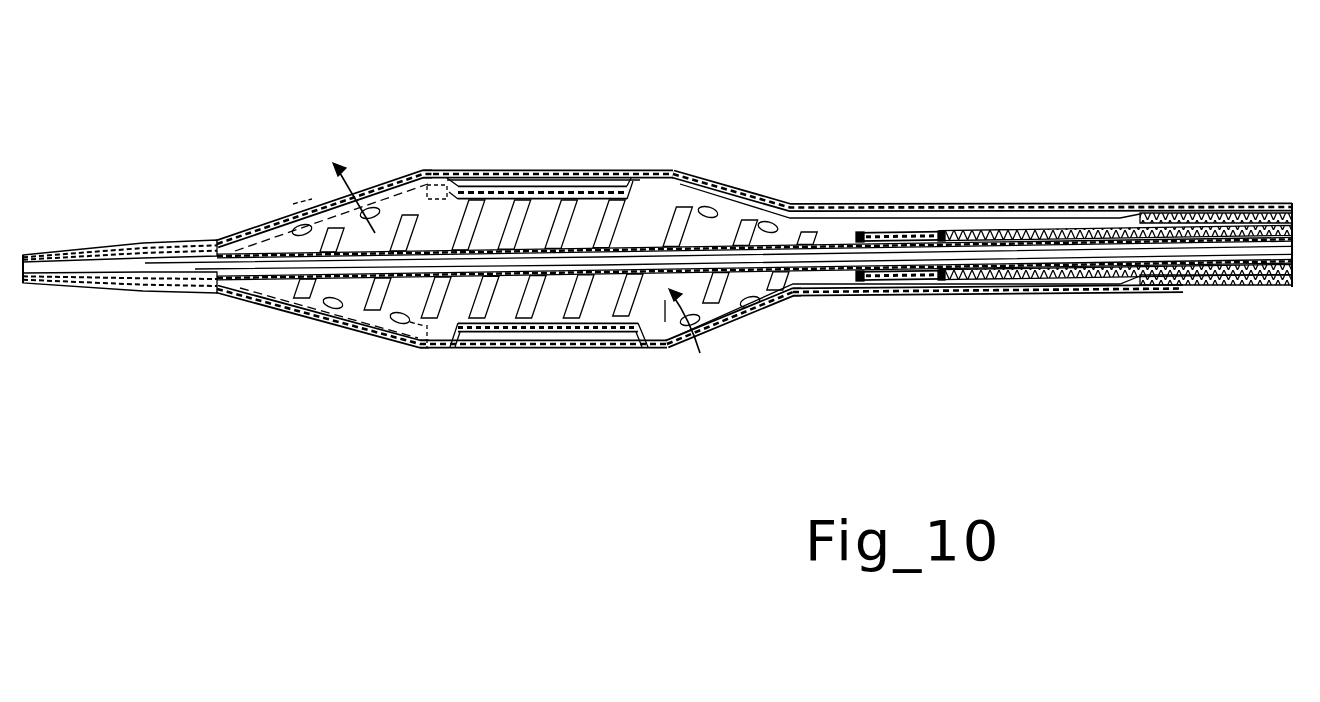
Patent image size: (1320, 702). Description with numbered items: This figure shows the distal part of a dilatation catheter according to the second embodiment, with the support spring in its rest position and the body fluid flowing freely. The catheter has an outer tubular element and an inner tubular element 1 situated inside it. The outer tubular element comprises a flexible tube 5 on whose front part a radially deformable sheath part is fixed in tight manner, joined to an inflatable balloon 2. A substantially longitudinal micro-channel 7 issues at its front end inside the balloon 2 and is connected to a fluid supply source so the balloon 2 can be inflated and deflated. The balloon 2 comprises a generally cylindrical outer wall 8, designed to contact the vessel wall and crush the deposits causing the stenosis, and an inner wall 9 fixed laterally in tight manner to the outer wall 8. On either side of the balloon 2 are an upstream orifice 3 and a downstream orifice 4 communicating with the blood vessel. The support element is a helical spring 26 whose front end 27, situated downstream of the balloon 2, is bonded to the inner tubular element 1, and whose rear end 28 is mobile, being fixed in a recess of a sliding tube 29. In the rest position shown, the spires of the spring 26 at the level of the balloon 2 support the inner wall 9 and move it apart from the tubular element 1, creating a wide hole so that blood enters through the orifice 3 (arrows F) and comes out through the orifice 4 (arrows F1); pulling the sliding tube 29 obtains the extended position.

The inner tubular element 1 is at (812, 274).
The inflatable balloon 2 is at (603, 128).
The upstream orifice 3 is at (748, 326).
The downstream orifice 4 is at (344, 193).
The flexible tube 5 is at (1236, 286).
The micro-channel 7 is at (688, 177).
The outer wall 8 is at (527, 171).
The inner wall 9 is at (488, 178).
The helical spring 26 is at (420, 322).
The front end 27 is at (194, 296).
The rear end 28 is at (901, 283).
The sliding tube 29 is at (1091, 282).
The arrows F is at (684, 337).
The arrows F1 is at (354, 182).